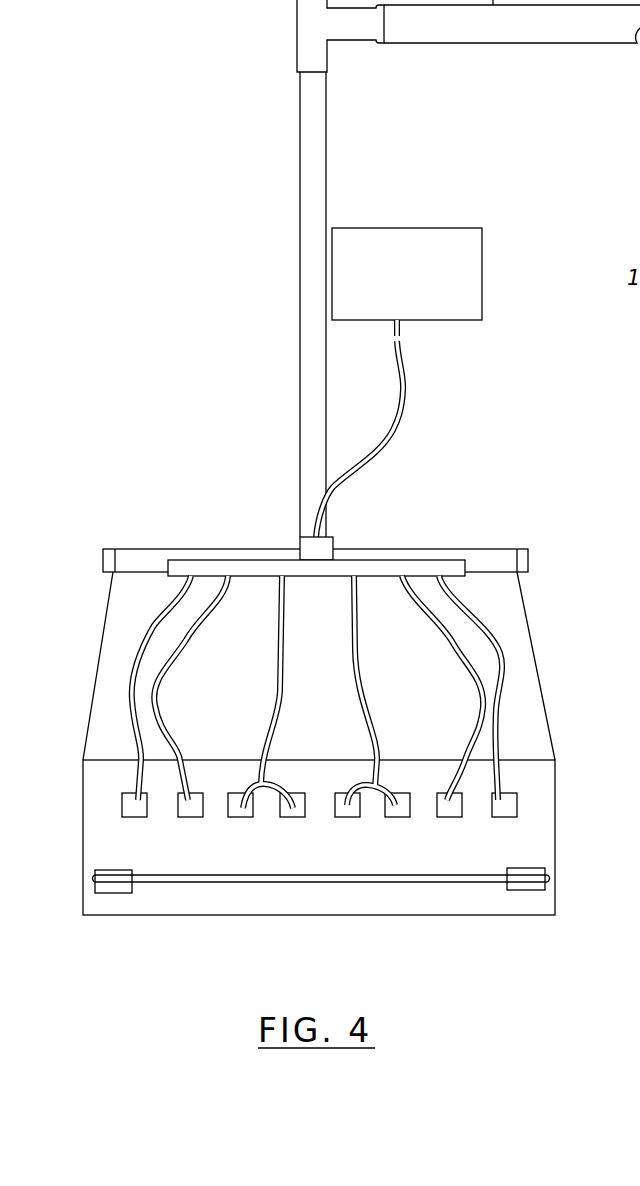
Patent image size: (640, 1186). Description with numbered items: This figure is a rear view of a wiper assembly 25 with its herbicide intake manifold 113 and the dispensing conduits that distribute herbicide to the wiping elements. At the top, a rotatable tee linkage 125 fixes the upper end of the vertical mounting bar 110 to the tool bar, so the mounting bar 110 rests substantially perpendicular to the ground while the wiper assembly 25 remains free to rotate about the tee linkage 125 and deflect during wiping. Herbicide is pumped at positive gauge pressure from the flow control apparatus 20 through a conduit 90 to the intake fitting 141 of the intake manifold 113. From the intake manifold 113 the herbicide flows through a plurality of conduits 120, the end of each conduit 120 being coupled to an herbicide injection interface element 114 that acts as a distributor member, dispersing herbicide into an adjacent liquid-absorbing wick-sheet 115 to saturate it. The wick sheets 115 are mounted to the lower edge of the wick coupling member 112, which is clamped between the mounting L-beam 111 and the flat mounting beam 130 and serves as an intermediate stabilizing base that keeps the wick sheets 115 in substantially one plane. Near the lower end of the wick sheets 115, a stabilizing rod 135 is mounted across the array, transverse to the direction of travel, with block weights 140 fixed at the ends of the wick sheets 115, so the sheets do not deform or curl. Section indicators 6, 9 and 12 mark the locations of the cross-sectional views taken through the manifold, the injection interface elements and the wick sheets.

The tee linkage 125 is at (297, 52).
The mounting bar 110 is at (300, 212).
The flow control apparatus 20 is at (482, 258).
The conduit 90 is at (403, 390).
The wiper assembly 25 is at (180, 471).
The wick-sheet 115 is at (466, 895).
The wick coupling member 112 is at (518, 632).
The flat mounting beam 130 is at (314, 531).
The intake manifold 113 is at (197, 567).
The intake fitting 141 is at (333, 540).
The mounting L-beam 111 is at (528, 563).
The herbicide injection interface element 114 is at (515, 808).
The conduit 120 is at (148, 640).
The stabilizing rod 135 is at (347, 882).
The block weight 140 is at (120, 890).
The section line 6- 6 is at (547, 503).
The section line 9- 9 is at (240, 766).
The section line 12- 12 is at (52, 940).